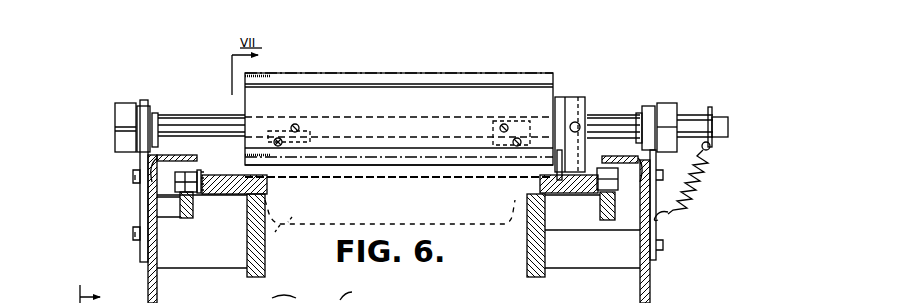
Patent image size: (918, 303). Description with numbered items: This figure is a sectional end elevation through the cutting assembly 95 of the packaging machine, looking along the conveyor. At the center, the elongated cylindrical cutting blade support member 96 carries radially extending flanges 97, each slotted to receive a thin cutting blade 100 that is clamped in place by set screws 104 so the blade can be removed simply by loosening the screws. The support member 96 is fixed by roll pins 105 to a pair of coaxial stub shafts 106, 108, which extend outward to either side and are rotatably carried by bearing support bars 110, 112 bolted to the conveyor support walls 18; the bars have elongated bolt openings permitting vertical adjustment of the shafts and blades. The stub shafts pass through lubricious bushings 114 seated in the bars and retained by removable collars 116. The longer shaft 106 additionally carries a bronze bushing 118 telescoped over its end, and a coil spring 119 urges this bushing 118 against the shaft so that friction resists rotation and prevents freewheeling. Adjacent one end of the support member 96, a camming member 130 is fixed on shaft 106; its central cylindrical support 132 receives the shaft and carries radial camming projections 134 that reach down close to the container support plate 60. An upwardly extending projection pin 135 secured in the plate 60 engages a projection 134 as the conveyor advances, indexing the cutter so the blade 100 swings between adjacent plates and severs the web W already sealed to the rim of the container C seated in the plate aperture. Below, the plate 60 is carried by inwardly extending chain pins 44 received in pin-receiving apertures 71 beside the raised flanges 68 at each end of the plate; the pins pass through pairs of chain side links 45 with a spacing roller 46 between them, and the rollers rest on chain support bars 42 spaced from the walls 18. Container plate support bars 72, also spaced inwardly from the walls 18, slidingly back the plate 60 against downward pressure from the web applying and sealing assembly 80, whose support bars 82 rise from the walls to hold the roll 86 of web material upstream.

The conveyor support wall 18 is at (152, 283).
The chain support bar 42 is at (193, 208).
The chain pin 44 is at (210, 176).
The chain side link 45 is at (200, 185).
The spacing roller 46 is at (183, 180).
The container support plate 60 is at (440, 198).
The raised flange 68 is at (244, 150).
The chain pin-receiving aperture 71 is at (222, 186).
The container plate support bar 72 is at (265, 262).
The web applying and sealing assembly 80 is at (393, 295).
The support bar 82 is at (346, 295).
The roll of web material 86 is at (305, 302).
The cutting assembly 95 is at (548, 44).
The cutting blade support member 96 is at (490, 55).
The flange 97 is at (420, 125).
The cutting blade 100 is at (358, 75).
The set screw 104 is at (279, 138).
The roll pin 105 is at (300, 126).
The stub shaft 106 is at (640, 116).
The stub shaft 108 is at (162, 114).
The bearing support bar 110 is at (646, 240).
The bearing support bar 112 is at (146, 205).
The bushing 114 is at (152, 112).
The collar 116 is at (118, 112).
The bronze bushing 118 is at (708, 109).
The coil spring 119 is at (700, 170).
The camming member 130 is at (572, 94).
The central cylindrical support 132 is at (583, 125).
The camming projection 134 is at (558, 148).
The projection pin 135 is at (556, 195).
The web W is at (372, 175).
The container C is at (390, 224).